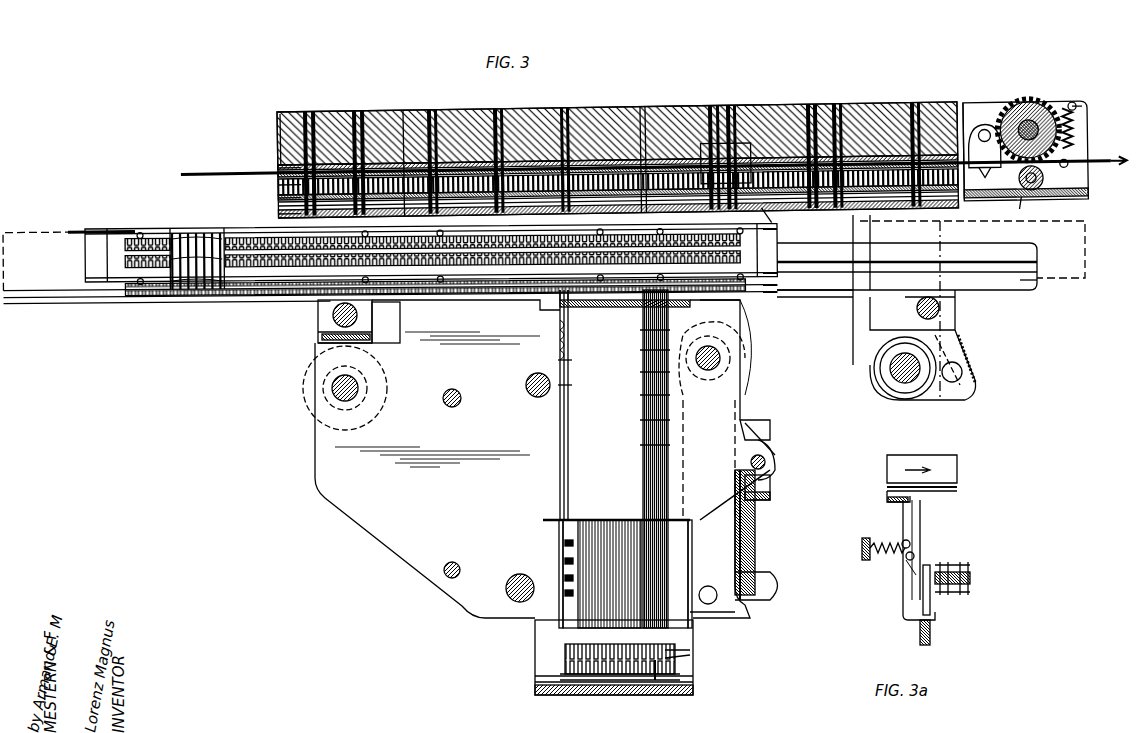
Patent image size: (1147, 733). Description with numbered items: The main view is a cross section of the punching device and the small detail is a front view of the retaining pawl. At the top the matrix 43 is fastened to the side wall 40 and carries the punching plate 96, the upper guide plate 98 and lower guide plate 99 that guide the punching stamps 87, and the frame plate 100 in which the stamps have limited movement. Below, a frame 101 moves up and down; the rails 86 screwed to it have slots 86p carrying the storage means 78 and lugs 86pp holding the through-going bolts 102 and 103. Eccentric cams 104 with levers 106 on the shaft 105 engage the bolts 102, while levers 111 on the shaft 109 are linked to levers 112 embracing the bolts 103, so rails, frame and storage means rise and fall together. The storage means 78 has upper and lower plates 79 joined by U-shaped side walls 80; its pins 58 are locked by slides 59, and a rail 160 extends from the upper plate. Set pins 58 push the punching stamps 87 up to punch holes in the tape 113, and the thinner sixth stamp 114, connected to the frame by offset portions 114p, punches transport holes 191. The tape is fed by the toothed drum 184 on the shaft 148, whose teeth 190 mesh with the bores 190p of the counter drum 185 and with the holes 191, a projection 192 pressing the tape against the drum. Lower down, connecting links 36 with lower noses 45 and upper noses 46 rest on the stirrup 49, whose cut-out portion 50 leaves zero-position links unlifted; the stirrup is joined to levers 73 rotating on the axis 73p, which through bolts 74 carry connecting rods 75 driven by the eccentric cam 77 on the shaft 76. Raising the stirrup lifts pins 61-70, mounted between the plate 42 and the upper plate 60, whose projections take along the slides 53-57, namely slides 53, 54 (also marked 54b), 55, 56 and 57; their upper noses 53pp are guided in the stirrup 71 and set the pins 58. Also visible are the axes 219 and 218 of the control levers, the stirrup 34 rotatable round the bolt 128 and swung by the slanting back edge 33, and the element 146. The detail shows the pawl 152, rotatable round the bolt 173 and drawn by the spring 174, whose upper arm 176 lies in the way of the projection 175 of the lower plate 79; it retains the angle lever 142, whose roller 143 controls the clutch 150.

In FIG. 3, the matrix 43 is at (618, 147).
In FIG. 3, the punching stamps 87 is at (306, 190).
In FIG. 3, the punching plate 96 is at (290, 158).
In FIG. 3, the upper guide plate 98 is at (280, 170).
In FIG. 3, the lower guide plate 99 is at (285, 190).
In FIG. 3, the frame plate 100 is at (282, 201).
In FIG. 3, the frame 101 is at (282, 214).
In FIG. 3, the punching tape 113 is at (195, 173).
In FIG. 3, the sixth punching stamp 114 is at (800, 168).
In FIG. 3, the offset portions 114p is at (780, 216).
In FIG. 3, the teeth 190 is at (1012, 112).
In FIG. 3, the transport holes 191 is at (983, 156).
In FIG. 3, the toothed drum 184 is at (1033, 112).
In FIG. 3, the shaft 148 is at (1060, 125).
In FIG. 3, the projection 192 is at (1020, 186).
In FIG. 3, the counter drum 185 is at (1043, 185).
In FIG. 3, the bores 190p is at (1038, 206).
In FIG. 3, the rail 160 is at (80, 230).
In FIG. 3, the storage means 78 is at (115, 240).
In FIG. 3a, the storage means 78 is at (958, 470).
In FIG. 3, the upper and lower plates 79 is at (150, 230).
In FIG. 3a, the upper and lower plates 79 is at (958, 488).
In FIG. 3, the pins 58 is at (195, 232).
In FIG. 3, the slides 59 is at (200, 295).
In FIG. 3, the U-shaped side walls 80 is at (246, 298).
In FIG. 3, the rails 86 is at (1037, 253).
In FIG. 3, the slots 86p is at (1035, 283).
In FIG. 3, the lugs 86pp is at (330, 318).
In FIG. 3, the through-going bolt 103 is at (940, 308).
In FIG. 3, the levers 112 is at (960, 343).
In FIG. 3, the shaft 109 is at (890, 368).
In FIG. 3, the levers 111 is at (962, 382).
In FIG. 3, the side wall 40 is at (360, 515).
In FIG. 3, the levers 106 is at (318, 342).
In FIG. 3, the through-going bolt 102 is at (360, 312).
In FIG. 3, the shaft 105 is at (346, 376).
In FIG. 3, the eccentric cams 104 is at (325, 415).
In FIG. 3, the axis 219 is at (452, 390).
In FIG. 3, the pin 146 is at (535, 396).
In FIG. 3, the stirrup 71 is at (550, 308).
In FIG. 3, the upper noses 53pp is at (596, 304).
In FIG. 3, the slides 53-57 is at (568, 425).
In FIG. 3, the slide 54 is at (568, 365).
In FIG. 3, the slide 53 is at (568, 386).
In FIG. 3, the pins 61-70 is at (642, 520).
In FIG. 3, the shaft 76 is at (708, 346).
In FIG. 3, the eccentric cam 77 is at (745, 366).
In FIG. 3, the slanting back edge 33 is at (748, 422).
In FIG. 3, the bolt 128 is at (768, 456).
In FIG. 3, the stirrup 34 is at (770, 482).
In FIG. 3, the connecting rods 75 is at (735, 530).
In FIG. 3, the bolts 74 is at (730, 588).
In FIG. 3, the levers 73 is at (738, 605).
In FIG. 3, the plate 42 is at (612, 628).
In FIG. 3, the upper plate 60 is at (556, 520).
In FIG. 3, the slide 54b is at (565, 548).
In FIG. 3, the slide 55 is at (565, 562).
In FIG. 3, the slide 56 is at (565, 578).
In FIG. 3, the slide 57 is at (565, 592).
In FIG. 3, the axis 73p is at (508, 580).
In FIG. 3, the axis 218 is at (452, 562).
In FIG. 3, the stirrup 49 is at (535, 643).
In FIG. 3, the upper nose 46 is at (568, 652).
In FIG. 3, the connecting links 36 is at (692, 652).
In FIG. 3, the cut-out portion 50 is at (598, 690).
In FIG. 3, the lower nose 45 is at (656, 690).
In FIG. 3a, the projection 175 is at (886, 495).
In FIG. 3a, the upper arm 176 is at (921, 512).
In FIG. 3a, the spring 174 is at (895, 544).
In FIG. 3a, the bolt 173 is at (904, 562).
In FIG. 3a, the roller 143 is at (928, 565).
In FIG. 3a, the clutch 150 is at (972, 578).
In FIG. 3a, the pawl 152 is at (903, 612).
In FIG. 3a, the angle lever 142 is at (935, 608).